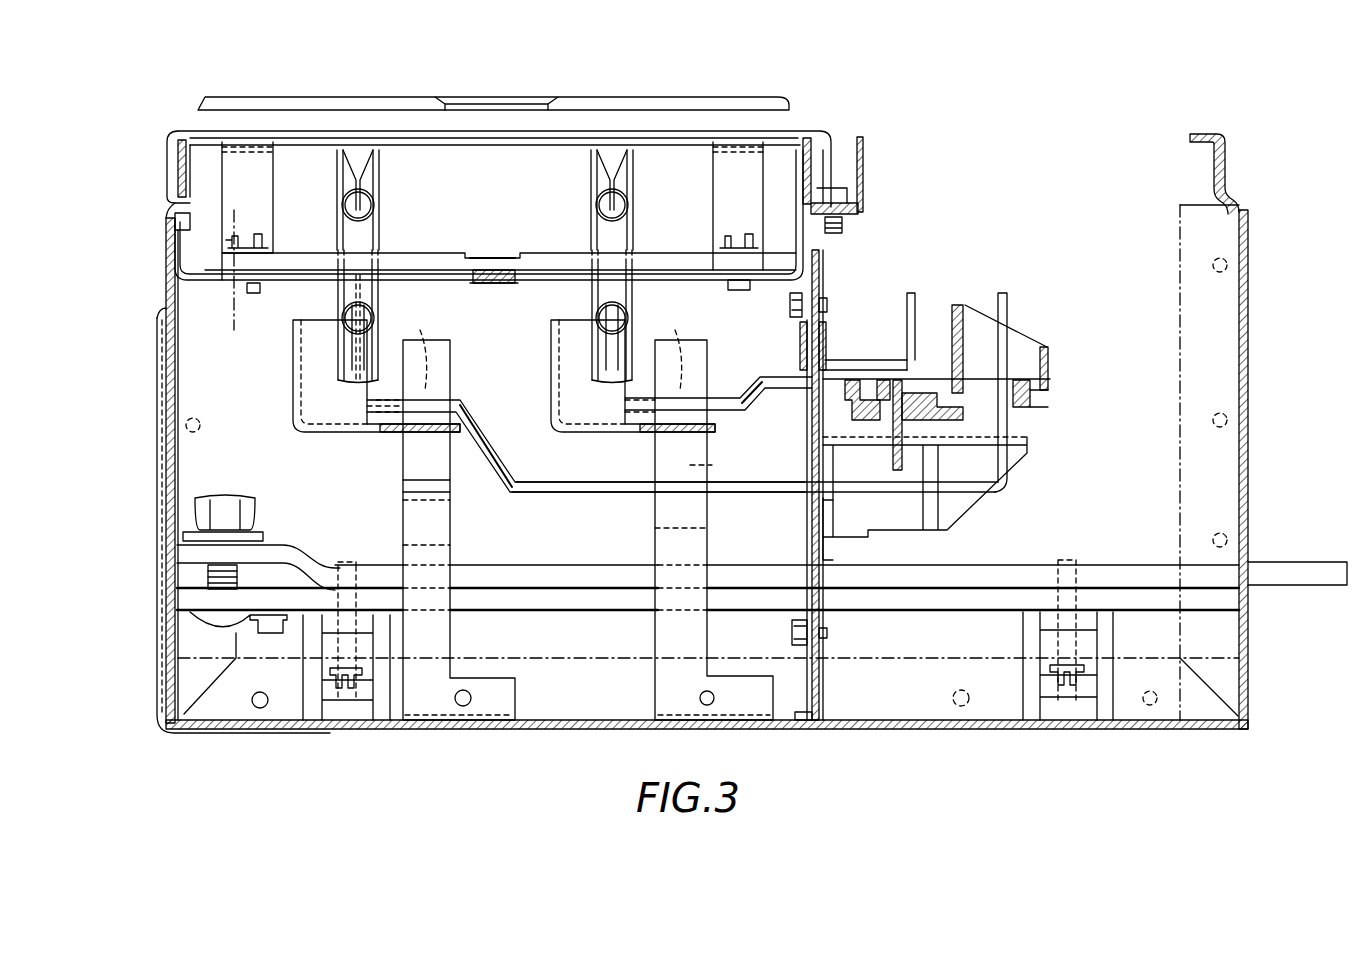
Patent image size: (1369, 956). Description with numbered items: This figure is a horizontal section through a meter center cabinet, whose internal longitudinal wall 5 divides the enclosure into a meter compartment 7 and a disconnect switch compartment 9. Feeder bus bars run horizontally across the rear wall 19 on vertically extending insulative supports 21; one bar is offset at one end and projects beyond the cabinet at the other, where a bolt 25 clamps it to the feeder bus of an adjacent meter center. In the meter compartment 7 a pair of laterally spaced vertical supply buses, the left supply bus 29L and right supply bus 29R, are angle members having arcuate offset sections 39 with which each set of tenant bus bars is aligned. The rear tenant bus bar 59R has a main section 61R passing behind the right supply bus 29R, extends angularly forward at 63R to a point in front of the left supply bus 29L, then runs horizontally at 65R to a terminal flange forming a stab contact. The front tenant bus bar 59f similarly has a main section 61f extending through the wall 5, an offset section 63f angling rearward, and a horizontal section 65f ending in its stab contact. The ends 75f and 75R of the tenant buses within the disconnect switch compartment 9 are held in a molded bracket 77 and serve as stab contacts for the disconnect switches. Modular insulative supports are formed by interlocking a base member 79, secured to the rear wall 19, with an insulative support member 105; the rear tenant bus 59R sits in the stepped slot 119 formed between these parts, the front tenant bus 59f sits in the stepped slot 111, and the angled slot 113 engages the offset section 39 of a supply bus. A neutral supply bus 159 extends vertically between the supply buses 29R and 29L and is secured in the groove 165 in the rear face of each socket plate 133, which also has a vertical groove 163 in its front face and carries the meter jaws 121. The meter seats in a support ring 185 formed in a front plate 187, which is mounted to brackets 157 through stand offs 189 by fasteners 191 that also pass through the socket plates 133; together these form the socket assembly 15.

The internal longitudinal wall 5 is at (823, 554).
The meter compartment 7 is at (247, 302).
The disconnect switch compartment 9 is at (1138, 163).
The socket assembly 15 is at (312, 162).
The rear wall 19 is at (535, 713).
The insulative support 21 is at (305, 673).
The bolt 25 is at (225, 500).
The left supply bus 29L is at (371, 445).
The right supply bus 29R is at (641, 441).
The offset section 39 is at (293, 378).
The front tenant bus bar 59f is at (846, 368).
The rear tenant bus bar 59R is at (411, 496).
The main section 61f is at (785, 391).
The main section 61R is at (730, 491).
The offset section 63f is at (752, 383).
The angular section 63R is at (505, 455).
The horizontal section 65f is at (720, 391).
The horizontal section 65R is at (460, 395).
The end of front tenant bus 75f is at (918, 293).
The end of rear tenant bus 75R is at (1010, 301).
The molded bracket 77 is at (1052, 354).
The base member 79 is at (415, 567).
The modular insulative support member 105 is at (465, 446).
The stepped slot 111 is at (588, 508).
The angled slot 113 is at (412, 437).
The stepped slot 119 is at (702, 474).
The meter jaws 121 is at (330, 274).
The socket plate 133 is at (418, 253).
The bracket 157 is at (210, 273).
The neutral supply bus 159 is at (510, 287).
The vertical groove 163 is at (496, 258).
The vertical groove 165 is at (478, 270).
The support ring 185 is at (720, 97).
The front plate 187 is at (793, 129).
The stand off 189 is at (235, 169).
The fastener 191 is at (242, 225).